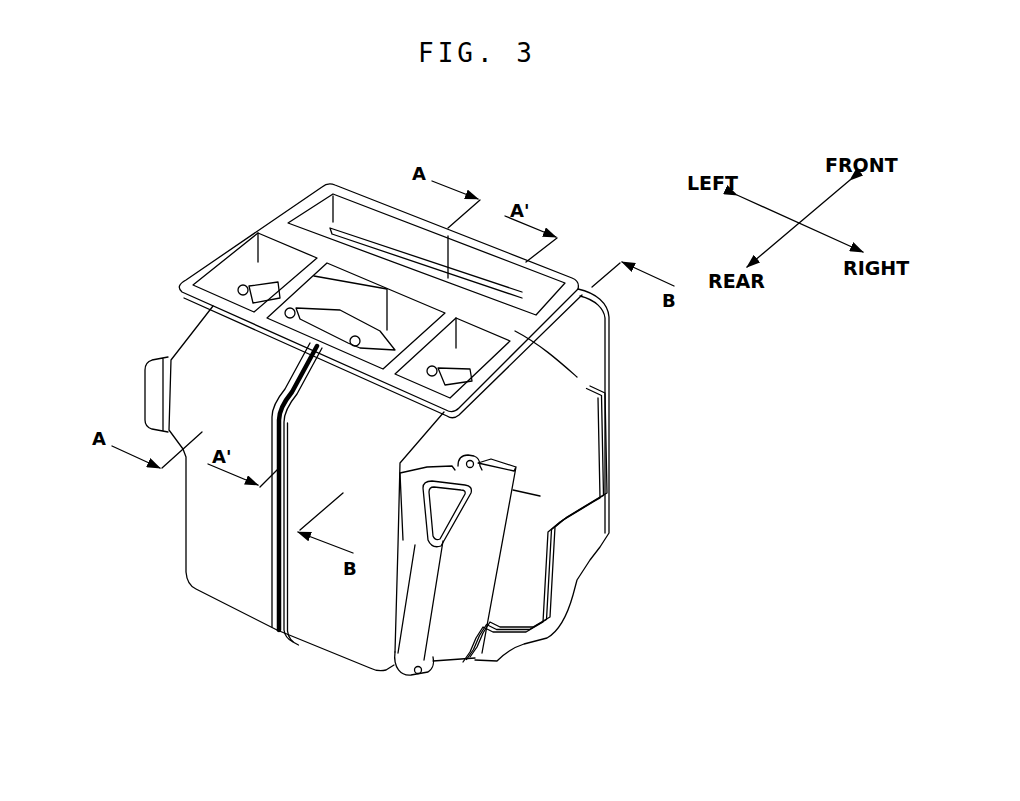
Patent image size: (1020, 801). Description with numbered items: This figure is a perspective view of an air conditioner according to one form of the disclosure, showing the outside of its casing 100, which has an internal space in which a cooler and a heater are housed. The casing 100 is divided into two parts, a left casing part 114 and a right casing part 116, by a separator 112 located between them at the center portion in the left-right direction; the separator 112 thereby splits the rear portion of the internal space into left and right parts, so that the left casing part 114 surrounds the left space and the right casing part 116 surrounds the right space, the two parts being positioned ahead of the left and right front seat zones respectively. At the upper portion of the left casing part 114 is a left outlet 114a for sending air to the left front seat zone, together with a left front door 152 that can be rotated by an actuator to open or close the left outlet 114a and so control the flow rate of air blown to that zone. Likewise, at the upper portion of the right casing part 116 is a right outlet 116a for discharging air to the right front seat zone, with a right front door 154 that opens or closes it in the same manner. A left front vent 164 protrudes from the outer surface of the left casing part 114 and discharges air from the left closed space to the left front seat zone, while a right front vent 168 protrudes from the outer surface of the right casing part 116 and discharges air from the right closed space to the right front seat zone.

The casing 100 is at (103, 501).
The separator 112 is at (270, 582).
The left casing part 114 is at (218, 488).
The left outlet 114a is at (228, 276).
The right casing part 116 is at (303, 503).
The right outlet 116a is at (577, 377).
The left front door 152 is at (264, 278).
The right front door 154 is at (483, 360).
The left front vent 164 is at (154, 399).
The right front vent 168 is at (413, 535).